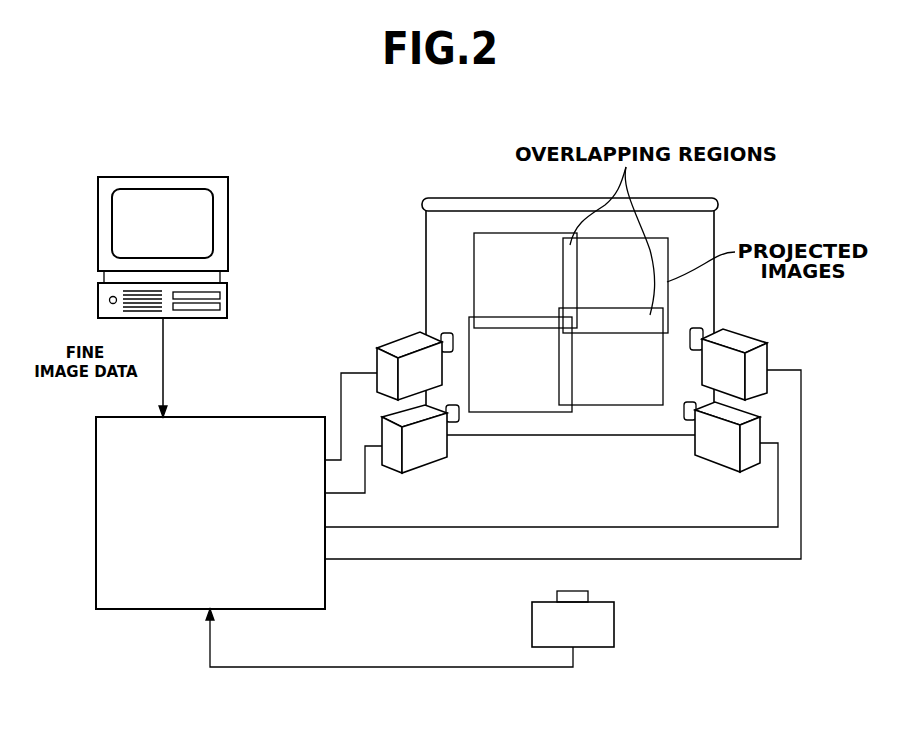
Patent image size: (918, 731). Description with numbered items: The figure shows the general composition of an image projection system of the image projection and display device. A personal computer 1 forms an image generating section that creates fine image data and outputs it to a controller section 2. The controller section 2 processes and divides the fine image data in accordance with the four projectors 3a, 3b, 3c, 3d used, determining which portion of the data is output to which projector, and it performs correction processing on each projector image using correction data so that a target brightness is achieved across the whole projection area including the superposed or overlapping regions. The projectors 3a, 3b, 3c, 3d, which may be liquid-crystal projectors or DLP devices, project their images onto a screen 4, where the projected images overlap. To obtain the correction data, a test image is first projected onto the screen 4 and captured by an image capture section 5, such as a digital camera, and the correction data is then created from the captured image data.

The personal computer 1 is at (162, 177).
The controller section 2 is at (251, 417).
The projector 3a is at (400, 340).
The projector 3b is at (738, 341).
The projector 3c is at (425, 455).
The projector 3d is at (712, 453).
The screen 4 is at (456, 198).
The image capture section 5 is at (617, 620).